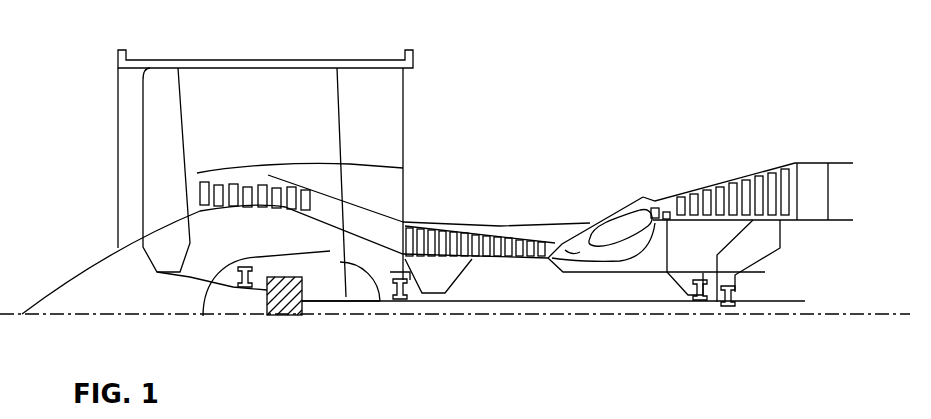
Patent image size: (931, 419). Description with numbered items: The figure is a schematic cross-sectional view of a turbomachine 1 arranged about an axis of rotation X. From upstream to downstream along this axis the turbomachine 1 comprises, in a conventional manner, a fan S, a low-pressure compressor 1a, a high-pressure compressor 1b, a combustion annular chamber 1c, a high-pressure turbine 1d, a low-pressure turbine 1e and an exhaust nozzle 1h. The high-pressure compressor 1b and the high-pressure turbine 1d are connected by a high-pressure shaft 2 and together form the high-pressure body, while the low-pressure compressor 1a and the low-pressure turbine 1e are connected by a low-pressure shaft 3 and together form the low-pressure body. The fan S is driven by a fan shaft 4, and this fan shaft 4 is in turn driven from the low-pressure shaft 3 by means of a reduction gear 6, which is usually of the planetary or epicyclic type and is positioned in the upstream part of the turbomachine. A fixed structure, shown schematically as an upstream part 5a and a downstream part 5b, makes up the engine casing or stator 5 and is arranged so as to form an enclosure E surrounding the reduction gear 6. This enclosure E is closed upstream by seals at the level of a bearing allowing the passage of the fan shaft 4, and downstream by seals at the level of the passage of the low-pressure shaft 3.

The turbomachine 1 is at (520, 100).
The low-pressure compressor 1a is at (220, 181).
The high-pressure compressor 1b is at (437, 232).
The combustion annular chamber 1c is at (615, 225).
The high-pressure turbine 1d is at (657, 210).
The low-pressure turbine 1e is at (780, 177).
The exhaust nozzle 1h is at (840, 193).
The high-pressure shaft 2 is at (585, 272).
The low-pressure shaft 3 is at (505, 303).
The fan shaft 4 is at (226, 287).
The engine casing or stator 5 is at (317, 240).
The upstream part 5a is at (218, 282).
The downstream part 5b is at (383, 278).
The reduction gear 6 is at (282, 297).
The enclosure E is at (313, 277).
The fan S is at (153, 128).
The axis of rotation X is at (0, 315).